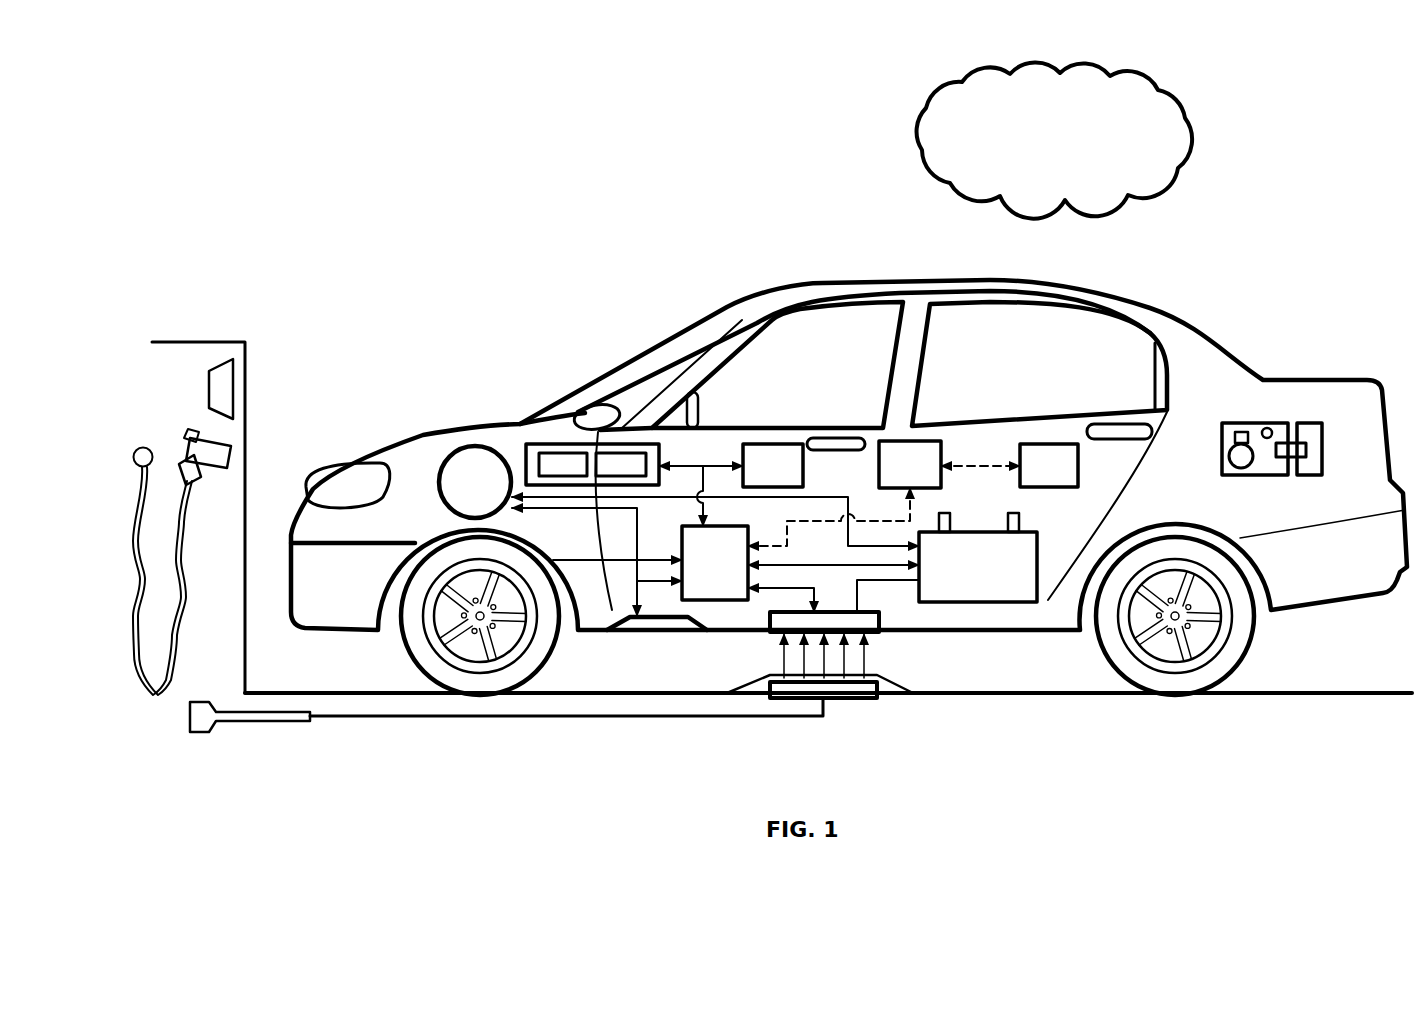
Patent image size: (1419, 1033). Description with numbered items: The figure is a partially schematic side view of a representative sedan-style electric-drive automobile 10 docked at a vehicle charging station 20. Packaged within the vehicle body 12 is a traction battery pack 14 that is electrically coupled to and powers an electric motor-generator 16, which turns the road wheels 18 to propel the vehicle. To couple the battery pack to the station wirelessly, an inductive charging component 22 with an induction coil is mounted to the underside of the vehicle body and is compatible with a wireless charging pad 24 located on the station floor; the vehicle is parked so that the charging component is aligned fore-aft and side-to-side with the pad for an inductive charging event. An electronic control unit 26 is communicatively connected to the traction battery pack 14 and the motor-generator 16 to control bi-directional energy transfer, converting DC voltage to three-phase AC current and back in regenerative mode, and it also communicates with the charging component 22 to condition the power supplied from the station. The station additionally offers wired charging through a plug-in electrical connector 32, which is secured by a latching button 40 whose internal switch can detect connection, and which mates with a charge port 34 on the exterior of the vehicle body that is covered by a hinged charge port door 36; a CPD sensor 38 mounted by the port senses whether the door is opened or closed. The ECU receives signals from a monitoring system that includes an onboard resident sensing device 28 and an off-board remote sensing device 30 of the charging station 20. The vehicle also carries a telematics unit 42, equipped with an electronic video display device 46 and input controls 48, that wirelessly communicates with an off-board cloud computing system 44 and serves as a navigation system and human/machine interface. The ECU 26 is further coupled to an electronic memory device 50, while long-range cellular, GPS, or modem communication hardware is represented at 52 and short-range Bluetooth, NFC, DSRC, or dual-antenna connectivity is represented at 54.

The automobile 10 is at (457, 232).
The vehicle body 12 is at (685, 258).
The traction battery pack 14 is at (1000, 603).
The electric motor-generator 16 is at (458, 450).
The road wheels 18 is at (470, 693).
The vehicle charging station 20 is at (272, 330).
The inductive charging component 22 is at (772, 614).
The wireless charging pad 24 is at (852, 698).
The electronic control unit 26 is at (715, 563).
The resident sensing device 28 is at (625, 633).
The remote sensing device 30 is at (222, 370).
The electrical connector 32 is at (188, 450).
The charge port 34 is at (1232, 423).
The charge port door 36 is at (1302, 430).
The CPD sensor 38 is at (1268, 430).
The latching button 40 is at (193, 428).
The telematics unit 42 is at (527, 450).
The cloud computing system 44 is at (1055, 141).
The electronic video display device 46 is at (556, 452).
The input controls 48 is at (612, 452).
The electronic memory device 50 is at (770, 445).
The long-range communication component 52 is at (918, 440).
The short-range wireless communication device 54 is at (1045, 445).